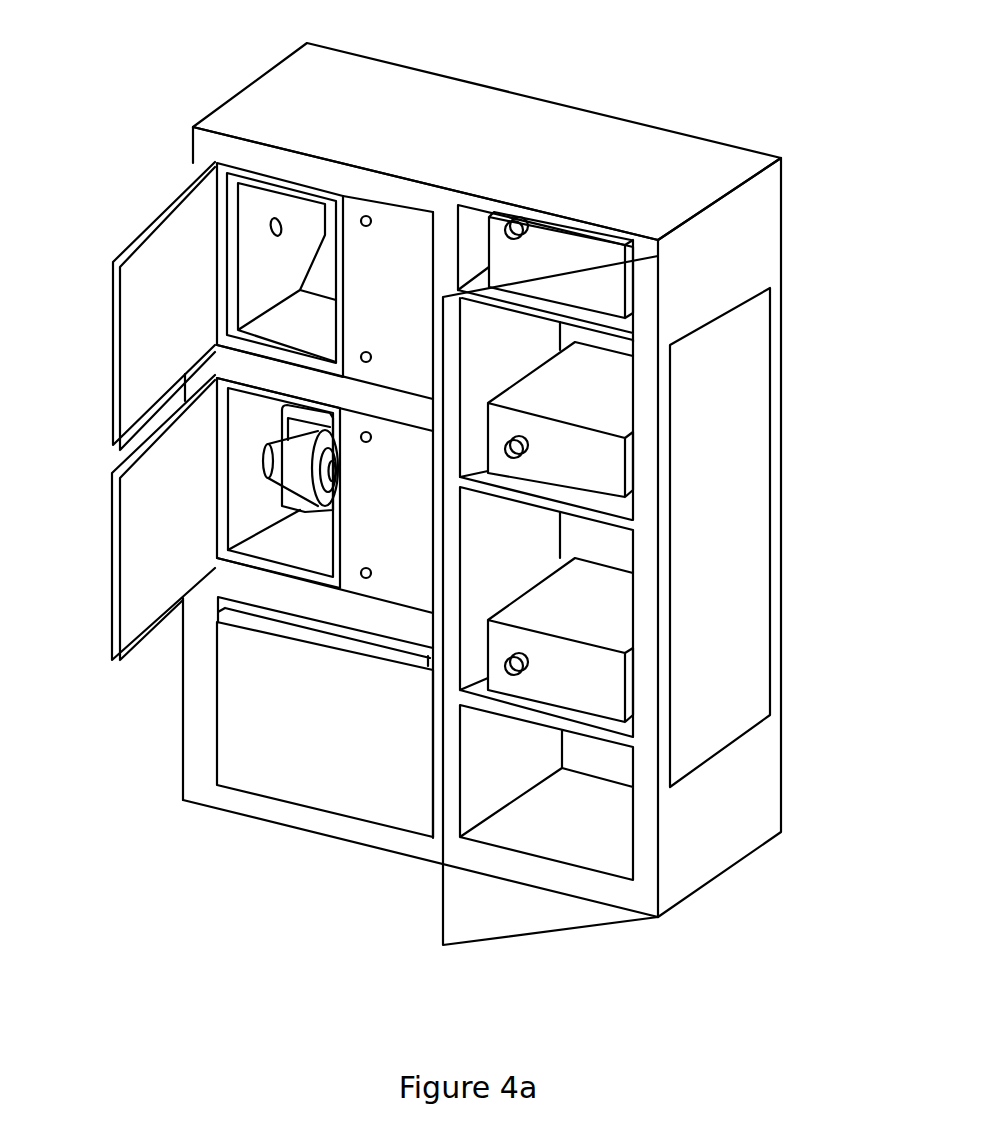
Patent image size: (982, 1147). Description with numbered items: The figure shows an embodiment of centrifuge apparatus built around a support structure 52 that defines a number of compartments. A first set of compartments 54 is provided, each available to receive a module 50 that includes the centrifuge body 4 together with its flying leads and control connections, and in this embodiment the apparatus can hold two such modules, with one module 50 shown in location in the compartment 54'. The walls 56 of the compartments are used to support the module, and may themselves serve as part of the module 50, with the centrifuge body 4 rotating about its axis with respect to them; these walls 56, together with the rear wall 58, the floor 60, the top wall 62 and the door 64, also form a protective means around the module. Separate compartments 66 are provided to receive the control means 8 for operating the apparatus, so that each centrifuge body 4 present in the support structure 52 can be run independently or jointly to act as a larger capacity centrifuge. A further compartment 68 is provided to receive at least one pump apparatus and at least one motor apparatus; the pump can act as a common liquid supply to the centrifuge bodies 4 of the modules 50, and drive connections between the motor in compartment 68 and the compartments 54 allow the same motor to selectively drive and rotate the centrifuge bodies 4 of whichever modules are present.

The centrifuge body 4 is at (303, 462).
The control means 8 is at (583, 252).
The module 50 is at (313, 438).
The support structure 52 is at (333, 832).
The first set of compartments 54 is at (255, 215).
The compartment 54' is at (197, 632).
The walls of the compartments 56 is at (263, 248).
The rear wall 58 is at (330, 210).
The floor 60 is at (178, 390).
The top wall 62 is at (278, 217).
The door 64 is at (146, 313).
The compartments 66 is at (618, 323).
The compartment 68 is at (275, 755).